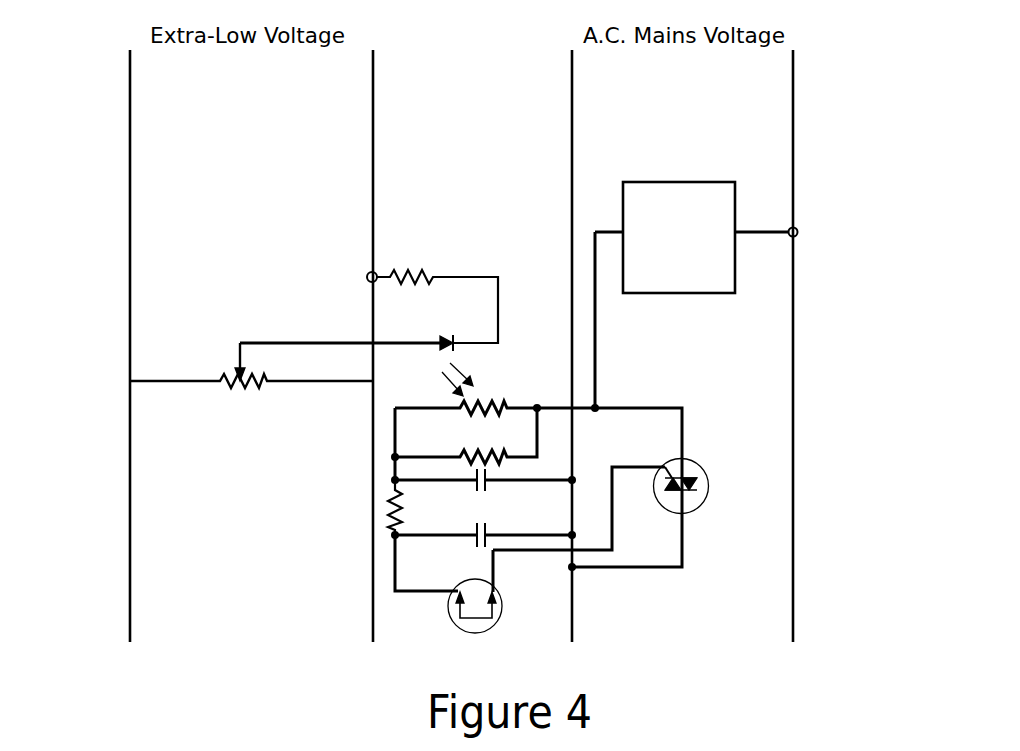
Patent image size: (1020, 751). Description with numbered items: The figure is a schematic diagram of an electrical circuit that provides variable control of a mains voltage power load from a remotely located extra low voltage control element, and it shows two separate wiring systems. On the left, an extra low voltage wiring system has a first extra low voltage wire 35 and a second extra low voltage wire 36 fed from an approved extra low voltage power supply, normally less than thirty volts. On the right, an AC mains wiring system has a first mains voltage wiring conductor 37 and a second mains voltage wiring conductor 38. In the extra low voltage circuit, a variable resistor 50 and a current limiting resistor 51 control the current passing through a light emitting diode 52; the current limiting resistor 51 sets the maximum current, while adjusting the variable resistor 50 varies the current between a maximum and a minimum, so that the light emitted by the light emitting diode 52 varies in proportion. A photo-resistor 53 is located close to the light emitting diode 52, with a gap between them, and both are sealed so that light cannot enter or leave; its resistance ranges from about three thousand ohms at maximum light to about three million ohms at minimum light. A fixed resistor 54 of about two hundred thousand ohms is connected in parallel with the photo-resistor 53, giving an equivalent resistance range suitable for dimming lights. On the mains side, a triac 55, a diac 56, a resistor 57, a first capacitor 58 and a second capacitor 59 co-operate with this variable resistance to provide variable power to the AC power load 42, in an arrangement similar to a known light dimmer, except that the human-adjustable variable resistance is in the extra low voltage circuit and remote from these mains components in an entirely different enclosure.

The first extra low voltage wire 35 is at (125, 75).
The second extra low voltage wire 36 is at (362, 137).
The first mains voltage wiring conductor 37 is at (578, 115).
The second mains voltage wiring conductor 38 is at (797, 175).
The AC power load 42 is at (723, 210).
The variable resistor 50 is at (223, 368).
The current limiting resistor 51 is at (412, 263).
The light emitting diode 52 is at (420, 332).
The photo-resistor 53 is at (455, 400).
The fixed resistor 54 is at (458, 452).
The triac 55 is at (710, 487).
The diac 56 is at (503, 598).
The resistor 57 is at (387, 518).
The first capacitor 58 is at (453, 468).
The second capacitor 59 is at (470, 546).